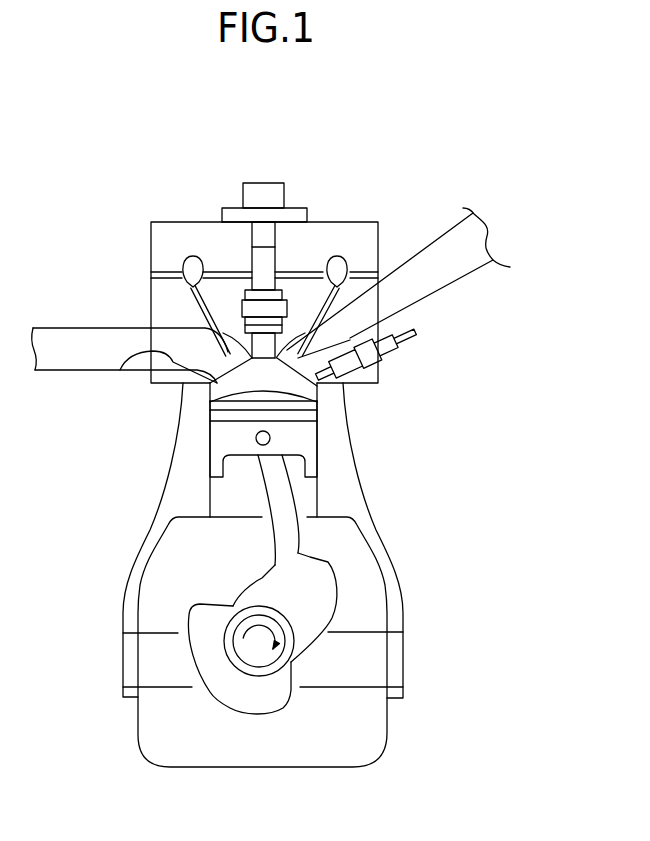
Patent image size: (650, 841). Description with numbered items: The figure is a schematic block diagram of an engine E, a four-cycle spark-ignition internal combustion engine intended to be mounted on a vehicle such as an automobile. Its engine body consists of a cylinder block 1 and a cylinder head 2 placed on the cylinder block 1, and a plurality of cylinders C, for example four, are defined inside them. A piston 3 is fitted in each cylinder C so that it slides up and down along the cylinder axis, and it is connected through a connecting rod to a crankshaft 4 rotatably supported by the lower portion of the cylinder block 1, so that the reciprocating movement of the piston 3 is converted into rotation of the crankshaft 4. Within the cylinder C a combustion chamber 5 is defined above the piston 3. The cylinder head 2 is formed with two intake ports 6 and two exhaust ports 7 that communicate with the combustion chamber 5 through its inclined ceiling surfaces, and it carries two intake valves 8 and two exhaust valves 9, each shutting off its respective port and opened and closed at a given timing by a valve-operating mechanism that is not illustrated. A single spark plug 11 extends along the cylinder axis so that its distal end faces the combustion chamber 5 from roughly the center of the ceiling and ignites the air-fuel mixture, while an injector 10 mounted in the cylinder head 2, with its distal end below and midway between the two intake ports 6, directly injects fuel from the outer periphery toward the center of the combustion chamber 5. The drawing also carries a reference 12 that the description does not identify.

The cylinder block 1 is at (155, 502).
The cylinder head 2 is at (150, 286).
The piston 3 is at (220, 435).
The crankshaft 4 is at (207, 690).
The combustion chamber 5 is at (290, 380).
The intake port 6 is at (400, 338).
The exhaust port 7 is at (128, 365).
The intake valve 8 is at (313, 293).
The exhaust valve 9 is at (208, 303).
The injector 10 is at (375, 385).
The spark plug 11 is at (252, 258).
The fuel injector 12 is at (265, 183).
The cylinder C is at (210, 500).
The engine E is at (420, 575).